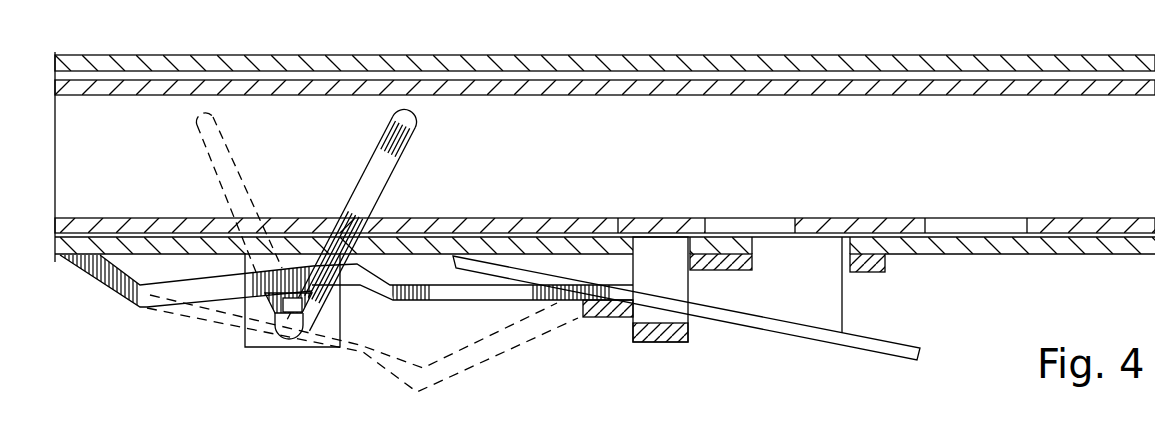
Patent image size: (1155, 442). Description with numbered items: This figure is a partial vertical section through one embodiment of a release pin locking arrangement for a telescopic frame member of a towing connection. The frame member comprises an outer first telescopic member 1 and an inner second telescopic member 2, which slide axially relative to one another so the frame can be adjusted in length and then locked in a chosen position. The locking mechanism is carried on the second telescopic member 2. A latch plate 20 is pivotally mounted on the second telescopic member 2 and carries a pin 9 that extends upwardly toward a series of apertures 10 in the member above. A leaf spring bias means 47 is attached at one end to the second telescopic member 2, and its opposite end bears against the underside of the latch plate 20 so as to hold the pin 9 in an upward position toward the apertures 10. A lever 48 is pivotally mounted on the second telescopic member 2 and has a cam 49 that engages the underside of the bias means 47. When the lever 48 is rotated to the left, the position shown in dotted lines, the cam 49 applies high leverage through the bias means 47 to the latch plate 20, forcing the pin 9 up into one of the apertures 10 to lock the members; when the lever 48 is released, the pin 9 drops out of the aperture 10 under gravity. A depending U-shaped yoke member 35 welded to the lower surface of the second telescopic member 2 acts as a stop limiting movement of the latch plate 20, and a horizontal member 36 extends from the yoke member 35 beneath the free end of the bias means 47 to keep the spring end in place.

The first telescopic member 1 is at (1023, 255).
The second telescopic member 2 is at (560, 217).
The pin 9 is at (843, 303).
The apertures 10 is at (766, 217).
The latch plate 20 is at (903, 357).
The U-shaped yoke member 35 is at (648, 341).
The horizontal member 36 is at (613, 318).
The leaf spring bias means 47 is at (485, 305).
The lever 48 is at (414, 132).
The cam 49 is at (273, 317).